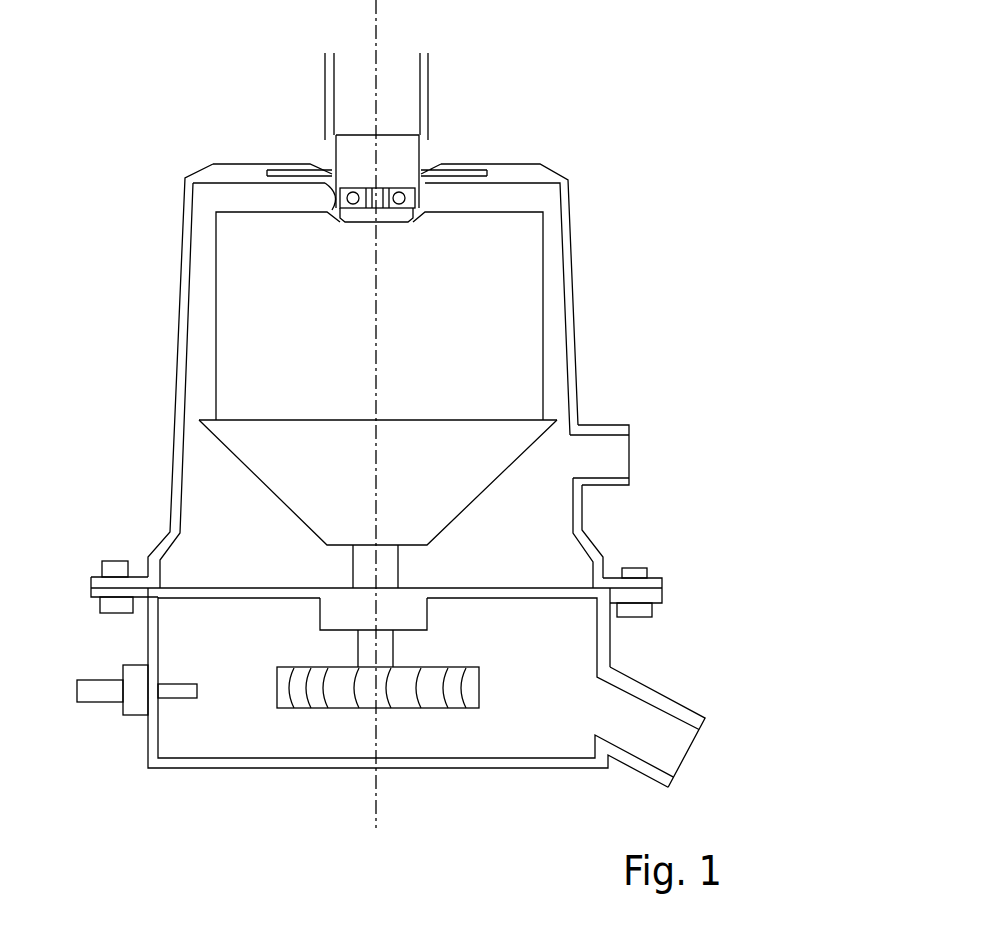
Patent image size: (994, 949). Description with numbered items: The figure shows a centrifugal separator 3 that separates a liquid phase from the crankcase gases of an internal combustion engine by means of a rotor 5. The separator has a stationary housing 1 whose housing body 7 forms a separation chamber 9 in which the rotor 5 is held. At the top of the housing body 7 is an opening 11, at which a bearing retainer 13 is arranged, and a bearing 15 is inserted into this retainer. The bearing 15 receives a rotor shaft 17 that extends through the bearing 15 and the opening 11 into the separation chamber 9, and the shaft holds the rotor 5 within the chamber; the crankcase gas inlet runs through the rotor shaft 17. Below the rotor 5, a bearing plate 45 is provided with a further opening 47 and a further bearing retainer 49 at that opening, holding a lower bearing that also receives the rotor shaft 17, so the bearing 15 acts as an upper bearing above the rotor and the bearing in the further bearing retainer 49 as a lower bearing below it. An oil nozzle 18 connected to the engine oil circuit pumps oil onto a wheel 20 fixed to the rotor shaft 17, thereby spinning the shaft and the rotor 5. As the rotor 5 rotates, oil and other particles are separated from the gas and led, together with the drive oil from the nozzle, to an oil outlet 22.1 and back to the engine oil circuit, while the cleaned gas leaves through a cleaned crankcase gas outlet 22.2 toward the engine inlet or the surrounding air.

The housing 1 is at (567, 228).
The centrifugal separator 3 is at (177, 130).
The rotor 5 is at (253, 317).
The housing body 7 is at (568, 310).
The separation chamber 9 is at (555, 372).
The opening 11 is at (335, 213).
The bearing retainer 13 is at (335, 175).
The bearing 15 is at (392, 183).
The rotor shaft 17 is at (395, 155).
The oil nozzle 18 is at (185, 690).
The wheel 20 is at (456, 675).
The oil outlet 22.1 is at (693, 743).
The cleaned crankcase gas outlet 22.2 is at (630, 457).
The intermediate plate 45 is at (500, 593).
The further opening 47 is at (400, 588).
The further bearing retainer 49 is at (343, 617).